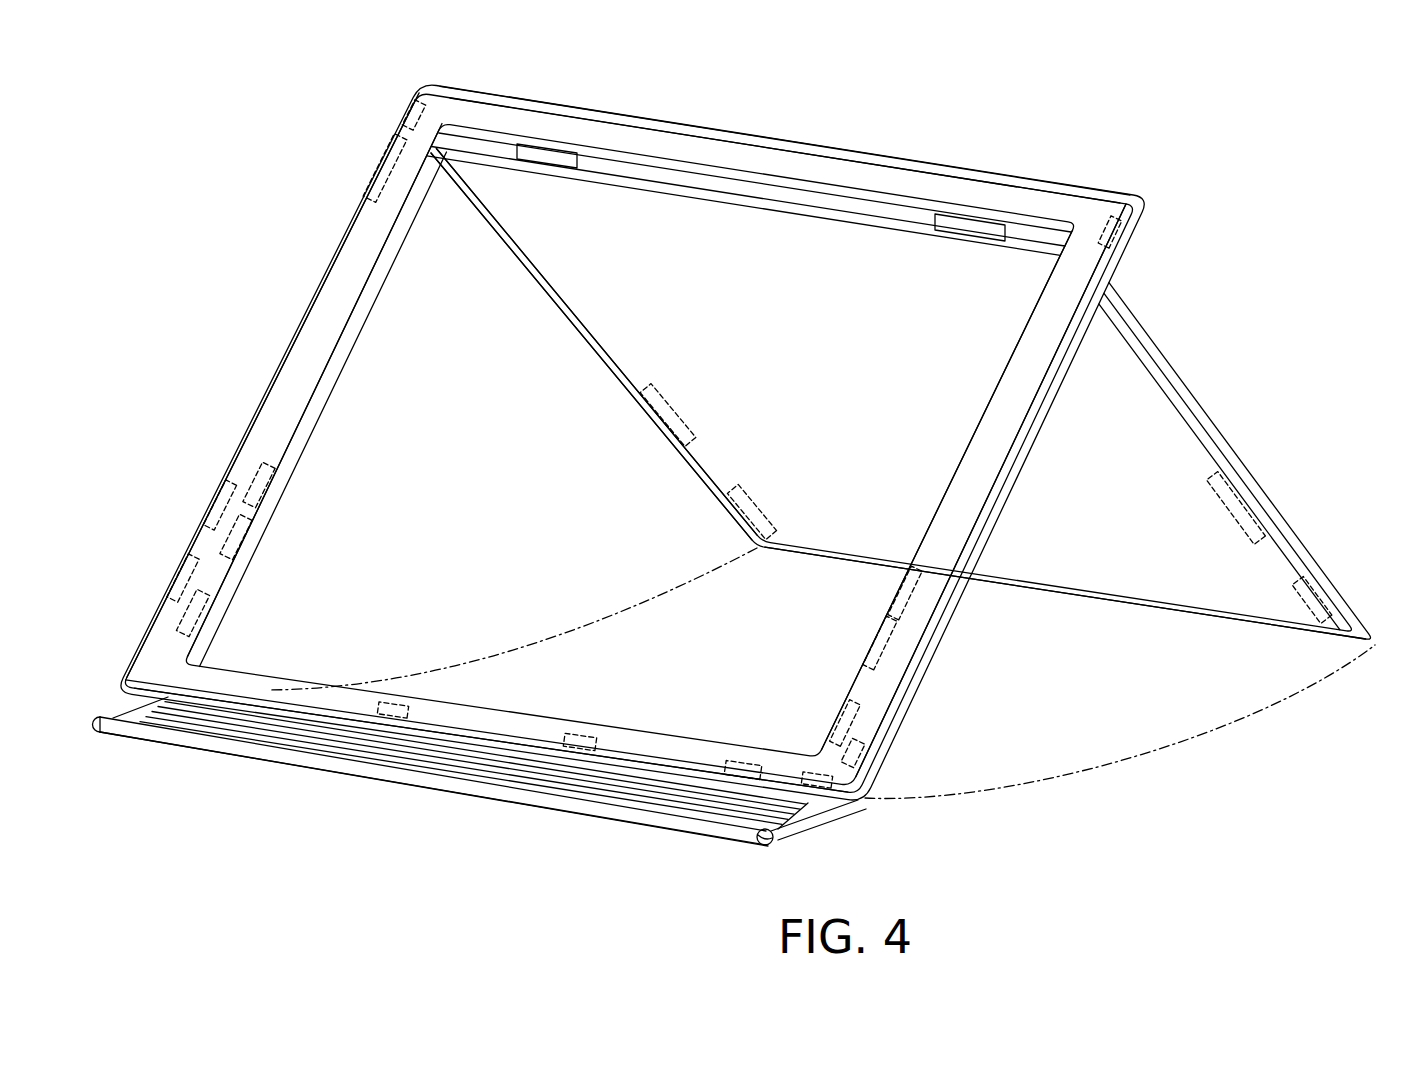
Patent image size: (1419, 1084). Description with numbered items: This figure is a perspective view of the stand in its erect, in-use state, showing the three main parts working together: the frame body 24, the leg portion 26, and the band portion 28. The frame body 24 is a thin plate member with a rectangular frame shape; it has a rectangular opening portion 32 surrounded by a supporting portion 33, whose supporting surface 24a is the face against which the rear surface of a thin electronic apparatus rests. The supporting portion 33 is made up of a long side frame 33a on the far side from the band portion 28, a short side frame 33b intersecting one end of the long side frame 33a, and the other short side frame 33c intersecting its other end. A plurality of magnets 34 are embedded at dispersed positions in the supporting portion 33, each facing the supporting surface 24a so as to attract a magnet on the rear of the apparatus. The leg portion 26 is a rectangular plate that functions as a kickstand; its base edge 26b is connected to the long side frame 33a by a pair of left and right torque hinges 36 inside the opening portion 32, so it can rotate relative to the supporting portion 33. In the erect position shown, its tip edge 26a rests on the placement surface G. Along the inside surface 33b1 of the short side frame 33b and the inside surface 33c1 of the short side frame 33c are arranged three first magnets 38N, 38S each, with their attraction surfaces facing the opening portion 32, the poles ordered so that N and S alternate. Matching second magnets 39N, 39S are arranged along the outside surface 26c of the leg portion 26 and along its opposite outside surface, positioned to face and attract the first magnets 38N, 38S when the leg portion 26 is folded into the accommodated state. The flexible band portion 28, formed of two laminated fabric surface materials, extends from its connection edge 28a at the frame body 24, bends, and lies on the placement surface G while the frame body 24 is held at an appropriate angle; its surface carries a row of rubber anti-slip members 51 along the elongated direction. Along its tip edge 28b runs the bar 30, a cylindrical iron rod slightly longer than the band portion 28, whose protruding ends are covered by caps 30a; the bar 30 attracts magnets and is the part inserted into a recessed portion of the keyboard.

The frame body 24 is at (1045, 202).
The supporting surface 24a is at (890, 175).
The leg portion 26 is at (923, 390).
The tip edge 26a is at (1021, 590).
The base edge 26b is at (690, 187).
The outside surface 26c is at (522, 265).
The band portion 28 is at (479, 770).
The connection edge 28a is at (548, 745).
The tip edge 28b is at (535, 800).
The bar 30 is at (477, 739).
The cap 30a is at (92, 716).
The opening portion 32 is at (700, 707).
The supporting portion 33 is at (790, 165).
The long side frame 33a is at (785, 150).
The short side frame 33b is at (330, 300).
The inside surface 33b1 is at (318, 394).
The short side frame 33c is at (1020, 393).
The inside surface 33c1 is at (975, 427).
The magnet 34 is at (383, 152).
The torque hinge 36 is at (538, 142).
The first magnet 38N is at (255, 522).
The first magnet 38S is at (222, 604).
The second magnet 39N is at (730, 502).
The second magnet 39S is at (640, 400).
The anti-slip member 51 is at (628, 772).
The placement surface G is at (1178, 722).